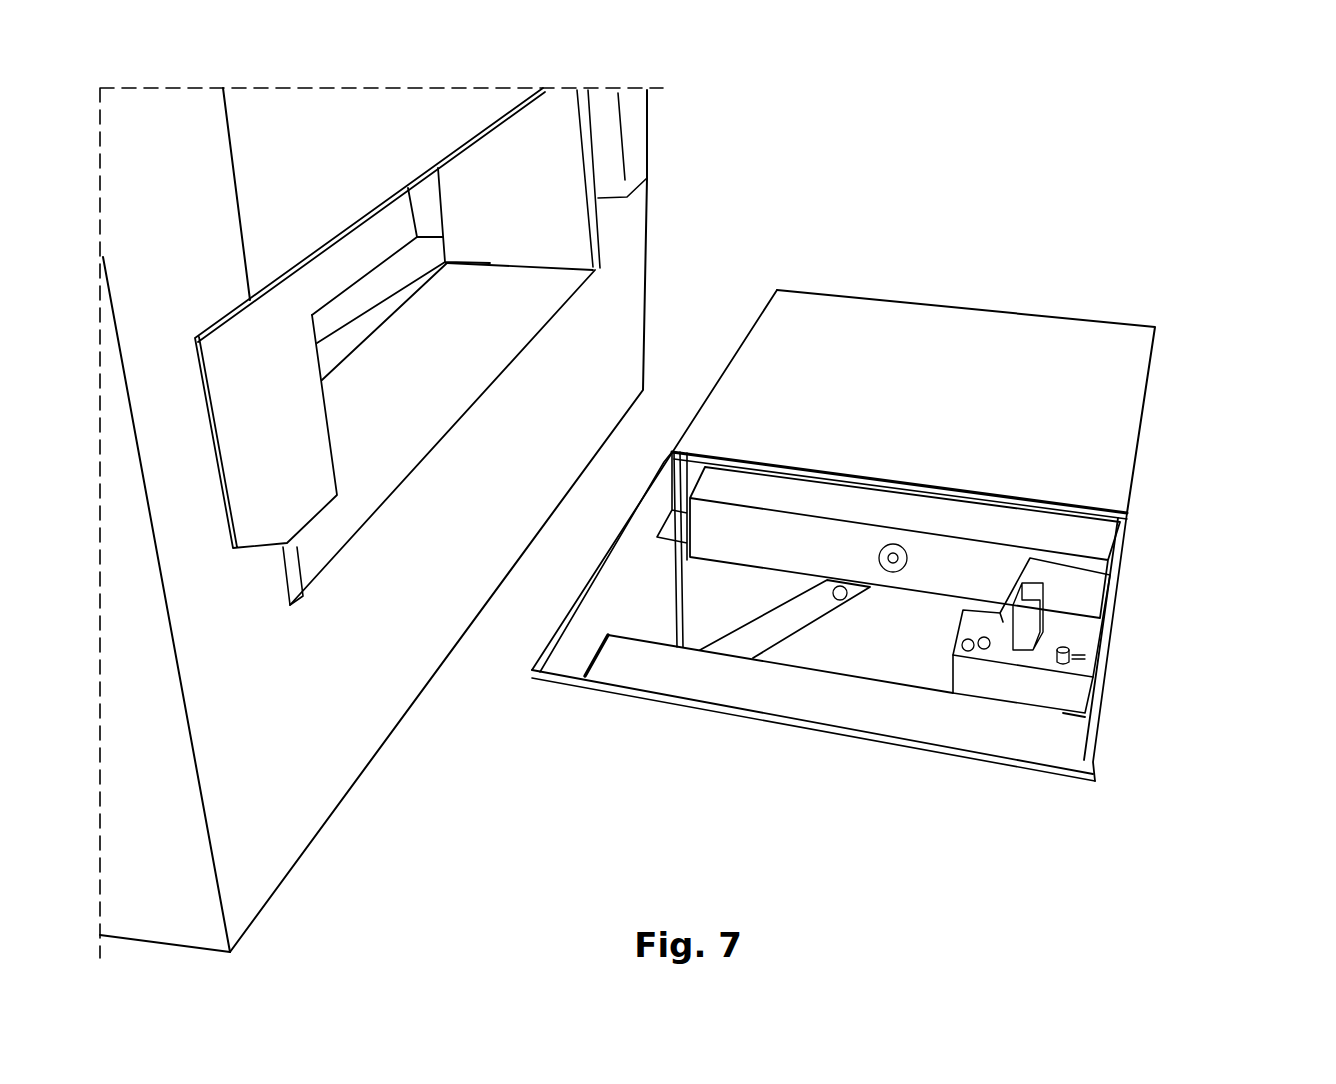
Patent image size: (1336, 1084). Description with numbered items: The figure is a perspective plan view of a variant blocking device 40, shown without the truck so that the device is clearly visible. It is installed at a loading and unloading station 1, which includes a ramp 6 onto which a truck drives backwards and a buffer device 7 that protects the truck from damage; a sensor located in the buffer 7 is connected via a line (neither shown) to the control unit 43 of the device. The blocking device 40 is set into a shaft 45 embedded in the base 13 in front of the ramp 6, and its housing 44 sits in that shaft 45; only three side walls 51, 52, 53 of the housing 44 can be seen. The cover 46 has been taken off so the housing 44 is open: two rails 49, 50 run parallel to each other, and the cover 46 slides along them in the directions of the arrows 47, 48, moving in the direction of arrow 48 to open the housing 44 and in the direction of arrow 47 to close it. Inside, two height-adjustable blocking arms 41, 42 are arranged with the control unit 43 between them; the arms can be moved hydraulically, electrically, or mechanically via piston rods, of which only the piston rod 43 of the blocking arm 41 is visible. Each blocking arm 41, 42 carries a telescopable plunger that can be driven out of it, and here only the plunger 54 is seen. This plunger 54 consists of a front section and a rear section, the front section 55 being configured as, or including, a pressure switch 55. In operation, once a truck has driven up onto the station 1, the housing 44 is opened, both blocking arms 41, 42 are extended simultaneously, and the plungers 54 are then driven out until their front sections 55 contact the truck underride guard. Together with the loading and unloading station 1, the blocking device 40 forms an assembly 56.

The loading and unloading station 1 is at (284, 137).
The ramp 6 is at (375, 135).
The buffer device 7 is at (258, 352).
The base 13 is at (314, 939).
The blocking device 40 is at (1145, 553).
The blocking arm 41 is at (817, 503).
The blocking arm 42 is at (812, 693).
The control unit / piston rod 43 is at (769, 622).
The housing 44 is at (970, 785).
The shaft 45 is at (583, 560).
The cover 46 is at (995, 357).
The arrow 47 is at (1225, 378).
The arrow 48 is at (1265, 350).
The rail 49 is at (562, 622).
The rail 50 is at (1105, 690).
The side wall 51 is at (727, 595).
The side wall 52 is at (667, 543).
The side wall 53 is at (597, 680).
The plunger 54 is at (662, 570).
The front section / pressure switch 55 is at (652, 558).
The assembly 56 is at (1116, 804).